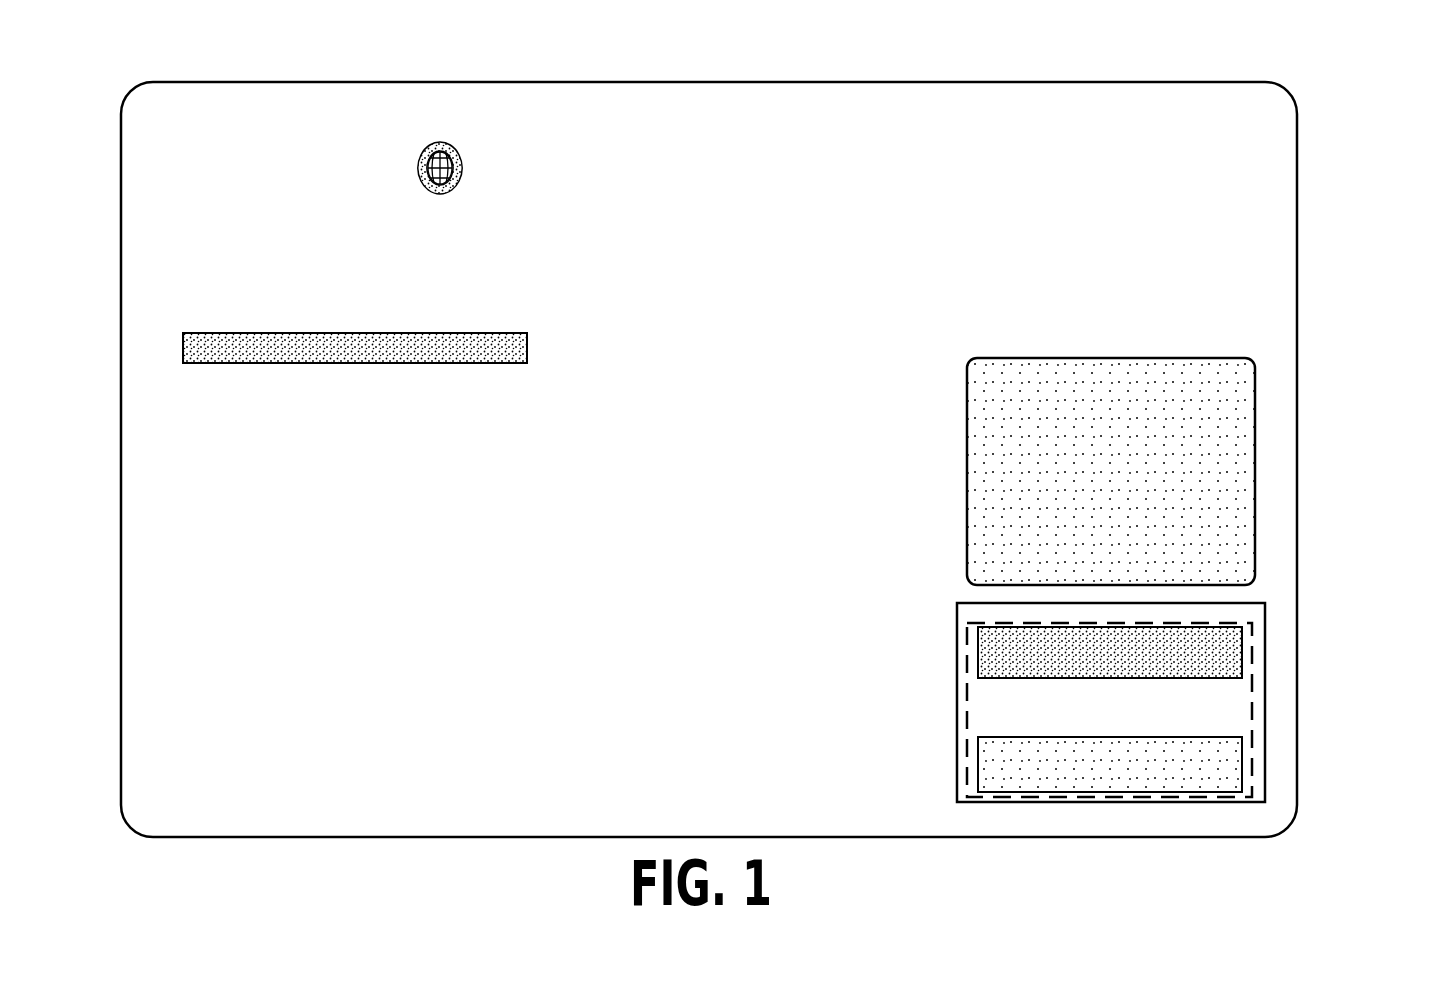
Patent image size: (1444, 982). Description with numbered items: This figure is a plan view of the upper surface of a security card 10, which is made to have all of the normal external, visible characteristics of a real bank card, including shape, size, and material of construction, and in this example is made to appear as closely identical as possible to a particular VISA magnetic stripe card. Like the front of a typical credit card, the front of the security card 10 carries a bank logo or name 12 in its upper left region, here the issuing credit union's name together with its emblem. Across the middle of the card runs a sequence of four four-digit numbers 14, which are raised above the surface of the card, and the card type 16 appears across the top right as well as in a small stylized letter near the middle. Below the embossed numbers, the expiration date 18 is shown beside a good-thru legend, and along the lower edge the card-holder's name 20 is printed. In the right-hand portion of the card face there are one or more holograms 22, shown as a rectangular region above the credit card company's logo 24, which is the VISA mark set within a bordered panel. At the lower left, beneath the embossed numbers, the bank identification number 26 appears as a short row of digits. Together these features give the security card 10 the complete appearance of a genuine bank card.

The security card 10 is at (1338, 291).
The bank logo or name 12 is at (172, 130).
The sequence of four 4-digit numbers 14 is at (1190, 515).
The card type 16 is at (1262, 143).
The expiration date 18 is at (457, 685).
The card-holder's name 20 is at (213, 808).
The hologram 22 is at (1215, 378).
The credit card company's logo 24 is at (957, 747).
The bank identification number 26 is at (200, 626).